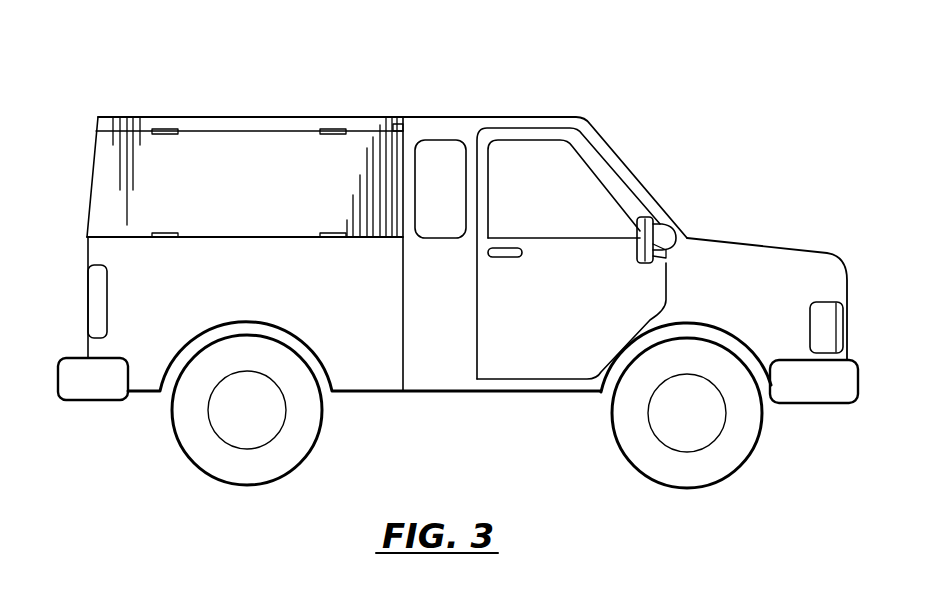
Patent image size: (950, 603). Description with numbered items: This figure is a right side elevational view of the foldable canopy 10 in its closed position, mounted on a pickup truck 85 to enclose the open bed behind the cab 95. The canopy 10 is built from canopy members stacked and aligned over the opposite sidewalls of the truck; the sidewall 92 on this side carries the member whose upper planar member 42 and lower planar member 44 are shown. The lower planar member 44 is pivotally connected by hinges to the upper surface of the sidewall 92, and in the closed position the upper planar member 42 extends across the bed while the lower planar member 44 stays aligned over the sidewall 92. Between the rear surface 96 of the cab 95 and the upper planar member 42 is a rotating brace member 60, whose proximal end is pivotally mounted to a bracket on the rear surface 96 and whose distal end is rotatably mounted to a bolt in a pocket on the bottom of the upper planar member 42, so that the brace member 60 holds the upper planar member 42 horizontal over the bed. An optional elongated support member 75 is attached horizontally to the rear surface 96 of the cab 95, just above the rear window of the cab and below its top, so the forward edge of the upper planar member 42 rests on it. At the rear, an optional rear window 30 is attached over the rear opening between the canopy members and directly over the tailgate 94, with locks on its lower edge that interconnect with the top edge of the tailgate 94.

The canopy 10 is at (176, 91).
The rear window 30 is at (96, 168).
The upper planar member 42 is at (284, 117).
The lower planar member 44 is at (232, 183).
The rotating brace member 60 is at (402, 157).
The elongated support member 75 is at (401, 117).
The pickup truck 85 is at (762, 243).
The sidewall 92 is at (340, 320).
The tailgate 94 is at (88, 257).
The cab 95 is at (583, 118).
The rear surface 96 is at (402, 200).